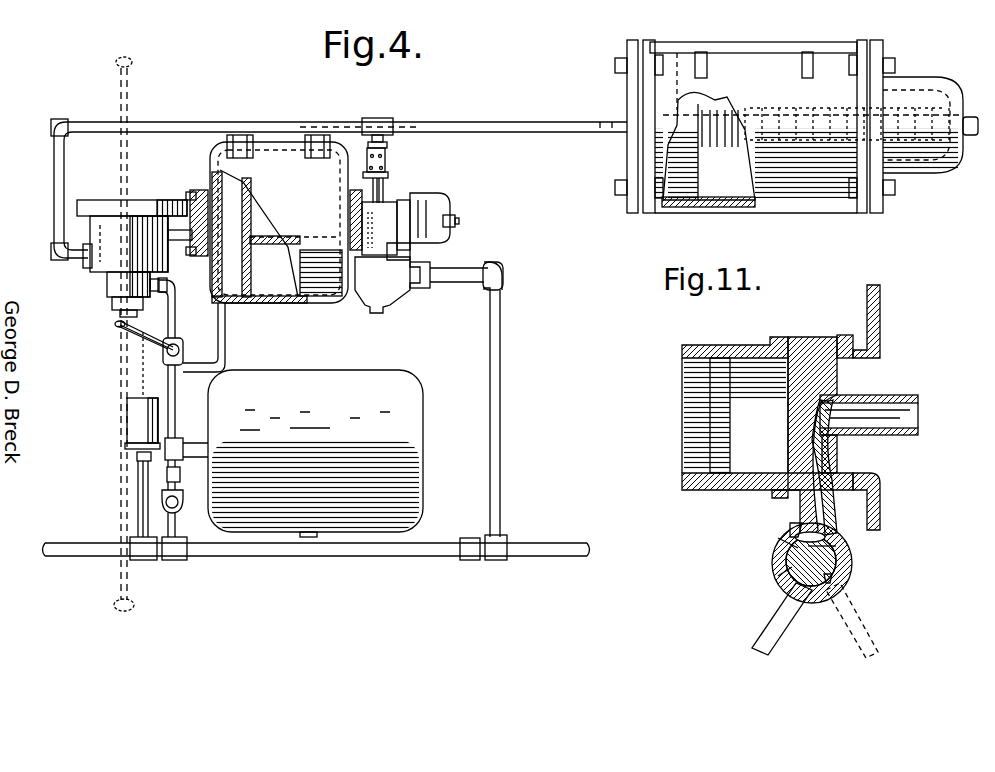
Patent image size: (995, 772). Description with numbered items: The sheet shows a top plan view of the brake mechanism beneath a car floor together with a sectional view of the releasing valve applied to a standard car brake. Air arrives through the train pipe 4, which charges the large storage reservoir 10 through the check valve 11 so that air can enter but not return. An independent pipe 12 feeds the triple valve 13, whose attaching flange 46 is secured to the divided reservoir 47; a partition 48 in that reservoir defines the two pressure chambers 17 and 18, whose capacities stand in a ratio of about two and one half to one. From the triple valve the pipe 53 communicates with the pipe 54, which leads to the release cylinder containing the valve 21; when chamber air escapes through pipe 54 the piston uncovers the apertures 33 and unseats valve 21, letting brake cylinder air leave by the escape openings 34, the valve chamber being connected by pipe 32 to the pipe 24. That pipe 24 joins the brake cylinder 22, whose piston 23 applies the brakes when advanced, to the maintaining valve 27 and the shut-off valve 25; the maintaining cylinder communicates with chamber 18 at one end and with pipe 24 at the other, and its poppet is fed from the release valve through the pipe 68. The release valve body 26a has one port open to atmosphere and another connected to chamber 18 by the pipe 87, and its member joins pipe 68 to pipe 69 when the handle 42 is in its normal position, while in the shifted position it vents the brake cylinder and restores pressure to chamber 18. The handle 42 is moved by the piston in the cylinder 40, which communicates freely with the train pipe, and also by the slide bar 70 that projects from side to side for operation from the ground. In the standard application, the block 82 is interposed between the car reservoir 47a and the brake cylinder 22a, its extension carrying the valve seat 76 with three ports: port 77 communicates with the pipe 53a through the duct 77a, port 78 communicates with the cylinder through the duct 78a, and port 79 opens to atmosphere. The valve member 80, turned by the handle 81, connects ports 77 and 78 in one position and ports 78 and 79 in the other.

In FIG. 4, the train pipe 4 is at (545, 556).
In FIG. 4, the storage reservoir 10 is at (288, 382).
In FIG. 4, the check valve 11 is at (180, 502).
In FIG. 4, the pipe 12 is at (501, 420).
In FIG. 4, the triple valve 13 is at (407, 253).
In FIG. 4, the pressure chamber 17 is at (283, 288).
In FIG. 4, the pressure chamber 18 is at (233, 302).
In FIG. 4, the valve 21 is at (386, 158).
In FIG. 4, the brake cylinder 22 is at (703, 207).
In FIG. 4, the piston 23 is at (695, 172).
In FIG. 4, the pipe 24 is at (54, 205).
In FIG. 4, the shut-off valve 25 is at (107, 290).
In FIG. 4, the valve body 26a is at (184, 348).
In FIG. 4, the maintaining valve 27 is at (105, 222).
In FIG. 4, the pipe 32 is at (388, 143).
In FIG. 4, the apertures 33 is at (390, 172).
In FIG. 4, the escape openings 34 is at (372, 150).
In FIG. 4, the cylinder 40 is at (127, 428).
In FIG. 4, the handle 42 is at (120, 335).
In FIG. 4, the attaching flange 46 is at (357, 190).
In FIG. 4, the divided reservoir 47 is at (279, 219).
In FIG. 4, the partition 48 is at (248, 222).
In FIG. 4, the pipe 53 is at (272, 246).
In FIG. 4, the pipe 54 is at (384, 190).
In FIG. 4, the pipe 68 is at (176, 305).
In FIG. 4, the pipe 69 is at (176, 390).
In FIG. 4, the slide bar 70 is at (120, 382).
In FIG. 4, the pipe 87 is at (226, 350).
In FIG. 11, the brake cylinder 22a is at (740, 345).
In FIG. 11, the car reservoir 47a is at (868, 300).
In FIG. 11, the pipe 53a is at (905, 395).
In FIG. 11, the valve seat 76 is at (852, 572).
In FIG. 11, the port 77 is at (825, 535).
In FIG. 11, the duct 77a is at (828, 450).
In FIG. 11, the port 78 is at (780, 540).
In FIG. 11, the duct 78a is at (790, 530).
In FIG. 11, the port 79 is at (785, 578).
In FIG. 11, the valve member 80 is at (815, 600).
In FIG. 11, the handle 81 is at (778, 635).
In FIG. 11, the block 82 is at (812, 338).